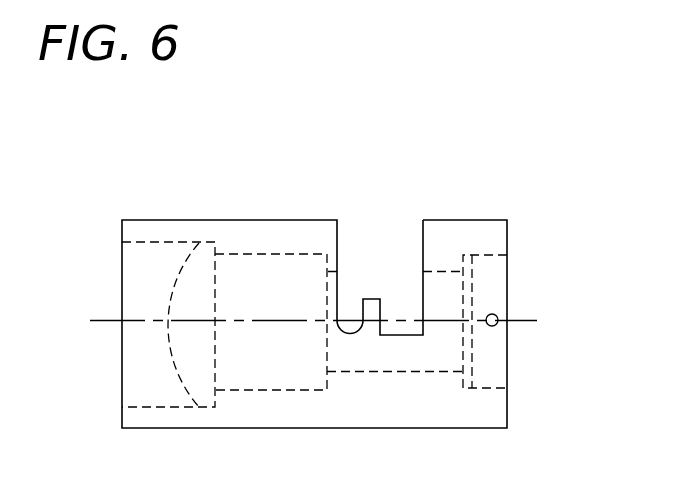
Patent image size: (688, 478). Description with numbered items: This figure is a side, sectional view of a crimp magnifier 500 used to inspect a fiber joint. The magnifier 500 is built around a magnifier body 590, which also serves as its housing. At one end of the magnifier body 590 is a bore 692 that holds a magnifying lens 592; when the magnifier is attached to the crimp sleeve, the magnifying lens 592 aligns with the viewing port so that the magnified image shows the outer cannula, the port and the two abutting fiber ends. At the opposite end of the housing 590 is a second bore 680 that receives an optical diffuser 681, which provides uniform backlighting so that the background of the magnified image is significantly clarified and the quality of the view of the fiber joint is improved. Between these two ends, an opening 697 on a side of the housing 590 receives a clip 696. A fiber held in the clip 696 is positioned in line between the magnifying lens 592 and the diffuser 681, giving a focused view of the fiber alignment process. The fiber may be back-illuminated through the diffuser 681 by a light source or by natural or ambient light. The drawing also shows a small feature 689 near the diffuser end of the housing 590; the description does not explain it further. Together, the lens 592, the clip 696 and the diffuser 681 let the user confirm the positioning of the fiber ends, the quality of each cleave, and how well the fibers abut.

The magnifier 500 is at (120, 170).
The magnifier body 590 is at (228, 219).
The magnifying lens 592 is at (182, 354).
The bore 692 is at (128, 282).
The clip 696 is at (348, 317).
The opening 697 is at (397, 250).
The bore 680 is at (497, 277).
The optical diffuser 681 is at (470, 365).
The pin 689 is at (499, 320).